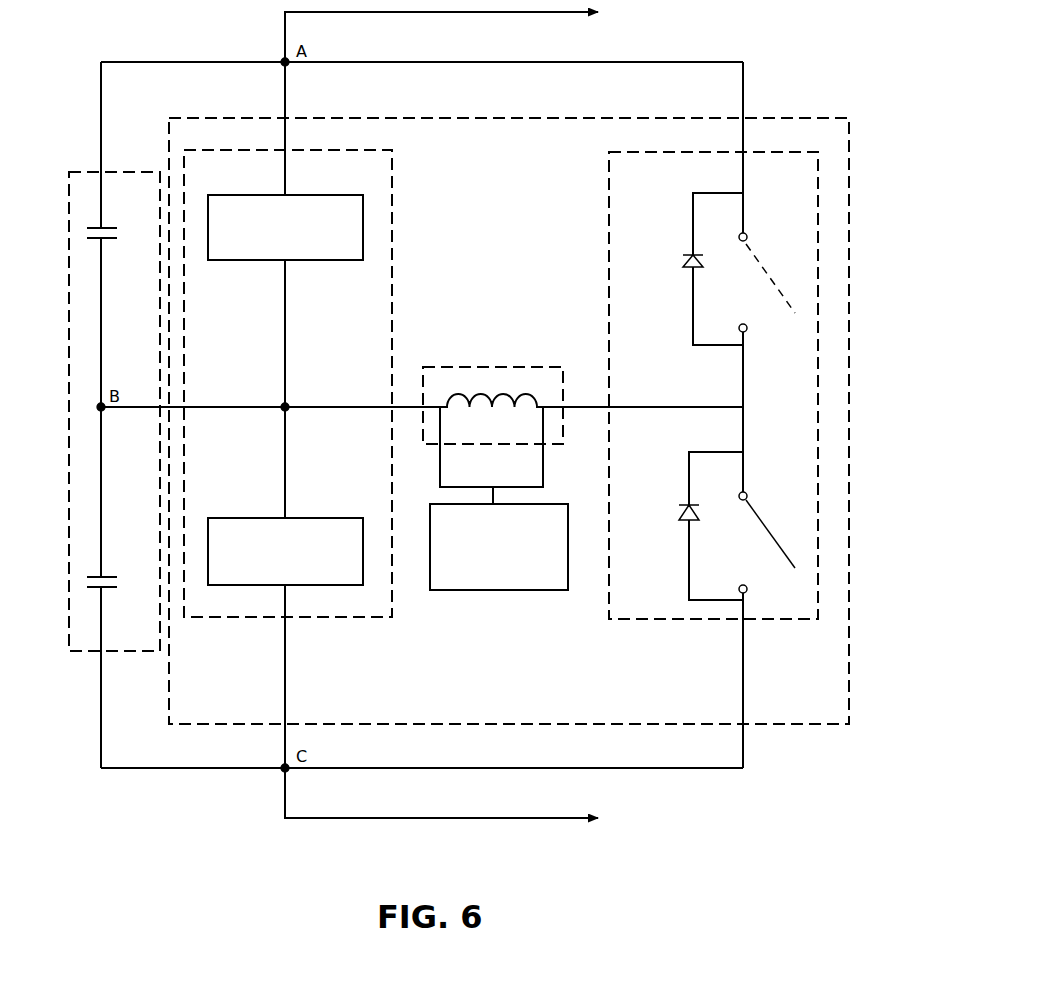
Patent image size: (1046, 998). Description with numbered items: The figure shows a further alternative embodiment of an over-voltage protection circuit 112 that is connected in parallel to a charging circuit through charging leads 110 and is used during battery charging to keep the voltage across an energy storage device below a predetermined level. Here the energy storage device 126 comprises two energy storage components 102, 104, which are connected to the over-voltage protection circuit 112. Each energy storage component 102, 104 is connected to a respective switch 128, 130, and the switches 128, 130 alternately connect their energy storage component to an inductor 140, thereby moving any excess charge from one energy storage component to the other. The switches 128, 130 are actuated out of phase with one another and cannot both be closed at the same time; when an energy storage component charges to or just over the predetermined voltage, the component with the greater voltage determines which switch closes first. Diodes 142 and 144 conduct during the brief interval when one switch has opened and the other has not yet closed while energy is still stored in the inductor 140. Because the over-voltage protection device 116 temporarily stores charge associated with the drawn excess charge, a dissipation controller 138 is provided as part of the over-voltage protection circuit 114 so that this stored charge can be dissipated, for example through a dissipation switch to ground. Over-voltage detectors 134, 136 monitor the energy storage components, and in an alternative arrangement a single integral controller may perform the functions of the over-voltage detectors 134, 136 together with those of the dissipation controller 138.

The charging leads 110 is at (471, 416).
The over-voltage protection circuit 112 is at (793, 114).
The over-voltage protection circuit 114 is at (261, 620).
The over-voltage protection device 116 is at (490, 364).
The energy storage device 126 is at (118, 170).
The energy storage component 102 is at (114, 247).
The energy storage component 104 is at (114, 568).
The switch 128 is at (740, 311).
The switch 130 is at (737, 565).
The over-voltage detector 134 is at (285, 227).
The over-voltage detector 136 is at (285, 551).
The dissipation controller 138 is at (499, 547).
The inductor 140 is at (491, 449).
The diode 142 is at (688, 269).
The diode 144 is at (684, 526).